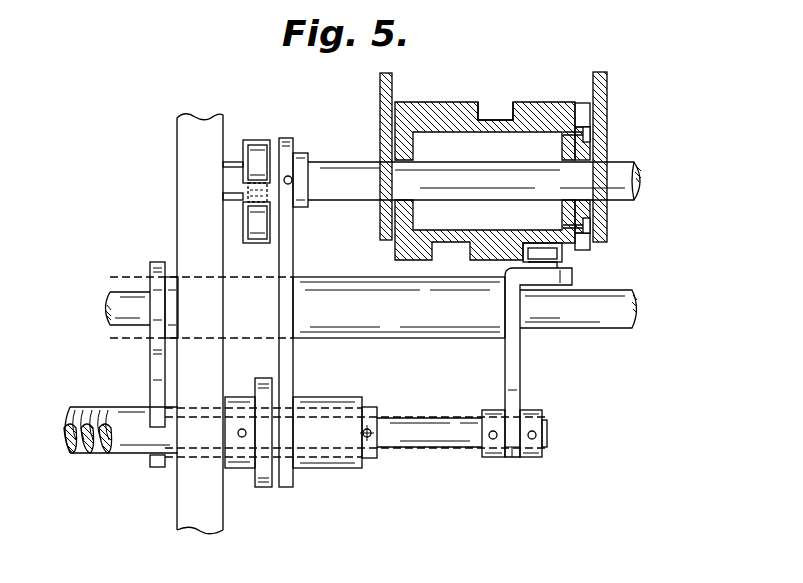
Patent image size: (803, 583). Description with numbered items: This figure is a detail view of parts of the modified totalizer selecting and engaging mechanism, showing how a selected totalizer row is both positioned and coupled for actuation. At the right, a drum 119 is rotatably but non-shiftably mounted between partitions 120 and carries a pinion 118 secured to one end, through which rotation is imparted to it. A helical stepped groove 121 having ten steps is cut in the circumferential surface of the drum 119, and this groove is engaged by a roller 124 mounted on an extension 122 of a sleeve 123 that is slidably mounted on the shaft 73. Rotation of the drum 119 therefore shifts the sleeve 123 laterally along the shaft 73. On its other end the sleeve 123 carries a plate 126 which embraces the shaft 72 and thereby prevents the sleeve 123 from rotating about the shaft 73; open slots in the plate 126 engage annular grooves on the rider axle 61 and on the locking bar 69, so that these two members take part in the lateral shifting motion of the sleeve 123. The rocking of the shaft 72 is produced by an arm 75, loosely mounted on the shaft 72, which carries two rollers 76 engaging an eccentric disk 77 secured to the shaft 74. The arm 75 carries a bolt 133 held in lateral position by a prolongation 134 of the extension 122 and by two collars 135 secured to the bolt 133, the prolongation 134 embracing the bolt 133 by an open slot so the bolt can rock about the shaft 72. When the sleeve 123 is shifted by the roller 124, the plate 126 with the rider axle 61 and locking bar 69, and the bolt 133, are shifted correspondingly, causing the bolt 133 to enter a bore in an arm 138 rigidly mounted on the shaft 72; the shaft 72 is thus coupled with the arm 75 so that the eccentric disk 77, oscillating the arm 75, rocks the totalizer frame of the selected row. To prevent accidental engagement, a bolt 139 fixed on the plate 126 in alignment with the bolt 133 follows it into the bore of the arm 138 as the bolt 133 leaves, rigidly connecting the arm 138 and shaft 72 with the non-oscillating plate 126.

The rider axle 61 is at (98, 447).
The locking bar 69 is at (76, 454).
The shaft 72 is at (137, 448).
The shaft 73 is at (132, 283).
The shaft 74 is at (641, 173).
The arm 75 is at (288, 246).
The rollers 76 is at (260, 140).
The eccentric disk 77 is at (255, 192).
The pinion 118 is at (594, 124).
The drum 119 is at (460, 90).
The partitions 120 is at (385, 105).
The helical stepped groove 121 is at (482, 113).
The extension 122 is at (513, 351).
The sleeve 123 is at (399, 327).
The roller 124 is at (562, 262).
The plate 126 is at (157, 357).
The bolt 133 is at (413, 438).
The prolongation 134 is at (513, 458).
The collars 135 is at (545, 441).
The arm 138 is at (262, 488).
The bolt 139 is at (197, 407).